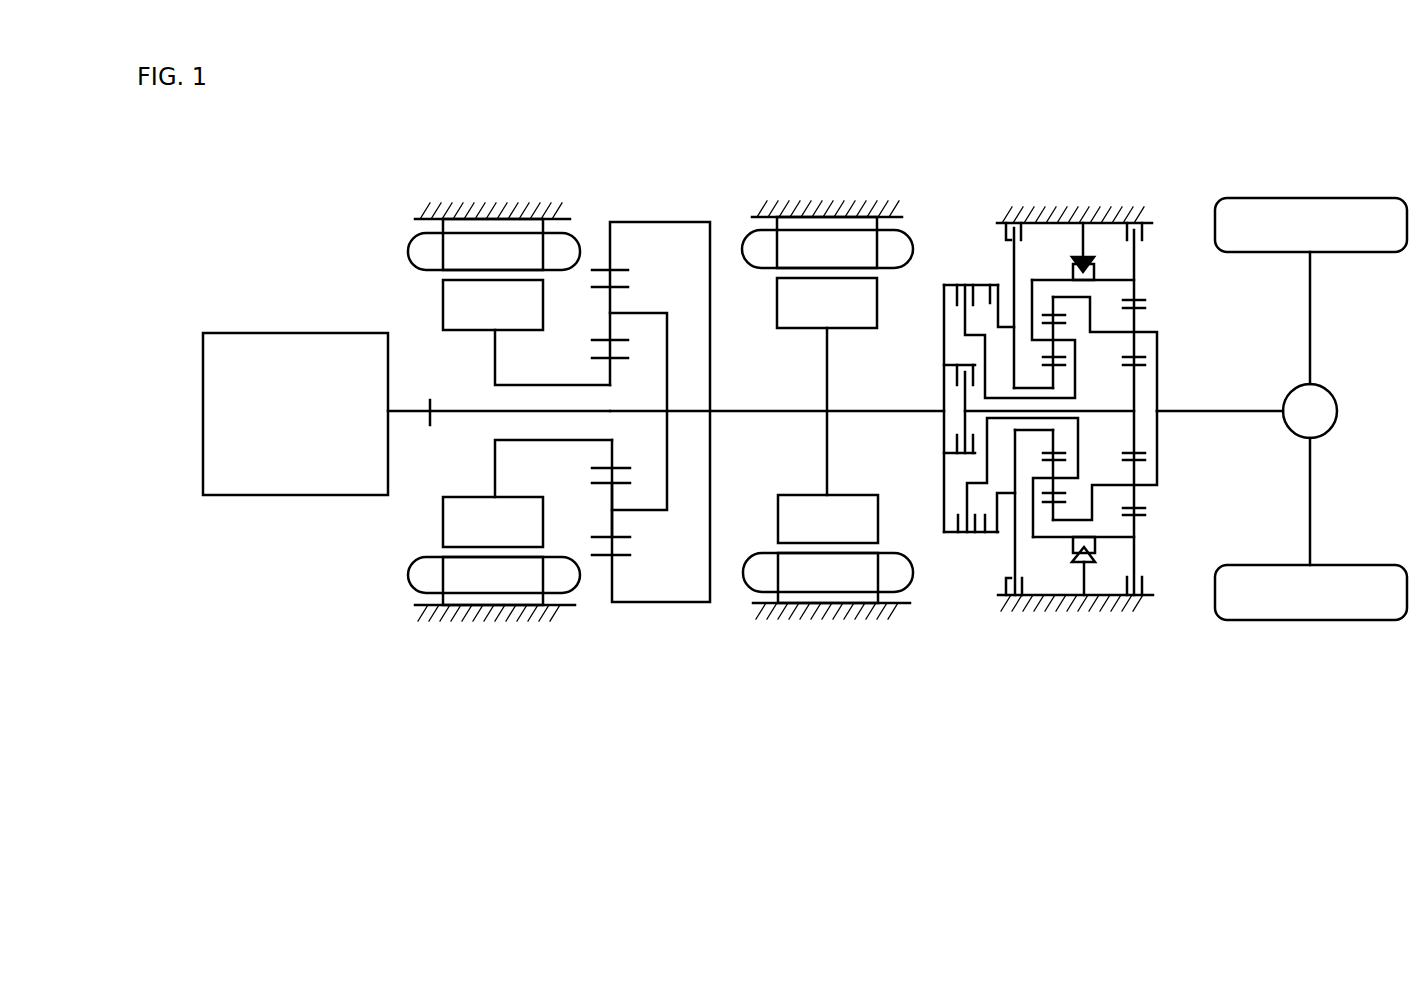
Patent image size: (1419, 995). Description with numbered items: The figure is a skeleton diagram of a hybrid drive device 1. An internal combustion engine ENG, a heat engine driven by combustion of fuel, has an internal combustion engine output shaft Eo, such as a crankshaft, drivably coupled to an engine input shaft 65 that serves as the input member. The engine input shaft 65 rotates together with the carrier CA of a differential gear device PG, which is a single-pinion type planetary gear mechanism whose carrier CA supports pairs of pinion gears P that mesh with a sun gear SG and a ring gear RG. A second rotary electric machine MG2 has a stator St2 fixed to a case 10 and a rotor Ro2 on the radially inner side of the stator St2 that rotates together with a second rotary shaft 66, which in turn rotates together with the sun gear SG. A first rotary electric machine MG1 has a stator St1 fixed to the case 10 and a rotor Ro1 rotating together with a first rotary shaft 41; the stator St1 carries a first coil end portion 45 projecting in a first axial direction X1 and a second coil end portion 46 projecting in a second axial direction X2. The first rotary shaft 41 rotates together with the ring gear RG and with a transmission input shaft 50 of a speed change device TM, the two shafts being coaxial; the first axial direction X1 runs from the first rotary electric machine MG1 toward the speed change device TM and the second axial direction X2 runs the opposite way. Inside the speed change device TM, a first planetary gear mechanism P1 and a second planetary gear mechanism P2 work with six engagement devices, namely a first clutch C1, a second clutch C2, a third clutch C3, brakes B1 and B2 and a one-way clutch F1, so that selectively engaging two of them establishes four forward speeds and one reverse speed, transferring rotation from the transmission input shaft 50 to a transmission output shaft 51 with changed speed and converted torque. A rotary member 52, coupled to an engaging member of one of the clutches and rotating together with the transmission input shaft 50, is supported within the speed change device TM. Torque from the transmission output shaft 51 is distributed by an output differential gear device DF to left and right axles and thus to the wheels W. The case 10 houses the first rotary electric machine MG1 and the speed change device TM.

The hybrid drive device 1 is at (358, 155).
The internal combustion engine ENG is at (272, 330).
The internal combustion engine output shaft Eo is at (407, 418).
The engine input shaft 65 is at (463, 418).
The second rotary shaft 66 is at (493, 360).
The second rotary electric machine MG2 is at (510, 347).
The stator St2 is at (494, 412).
The rotor Ro2 is at (493, 413).
The differential gear device PG is at (631, 359).
The carrier CA is at (650, 310).
The sun gear SG is at (627, 466).
The pinion gears P is at (611, 500).
The ring gear RG is at (630, 552).
The first rotary electric machine MG1 is at (833, 342).
The stator St1 is at (827, 410).
The rotor Ro1 is at (827, 410).
The first rotary shaft 41 is at (826, 372).
The first coil end portion 45 is at (905, 246).
The second coil end portion 46 is at (752, 240).
The transmission input shaft 50 is at (746, 415).
The rotary member 52 is at (943, 333).
The case 10 is at (538, 208).
The speed change device TM is at (1037, 362).
The first clutch C1 is at (962, 456).
The second clutch C2 is at (956, 293).
The third clutch C3 is at (990, 535).
The brake B1 is at (1003, 236).
The brake B2 is at (1148, 585).
The one-way clutch F1 is at (1075, 562).
The first planetary gear mechanism P1 is at (1050, 265).
The second planetary gear mechanism P2 is at (1160, 285).
The transmission output shaft 51 is at (1220, 405).
The output differential gear device DF is at (1332, 395).
The wheels W is at (1305, 205).
The first axial direction X1 is at (832, 757).
The second axial direction X2 is at (832, 757).